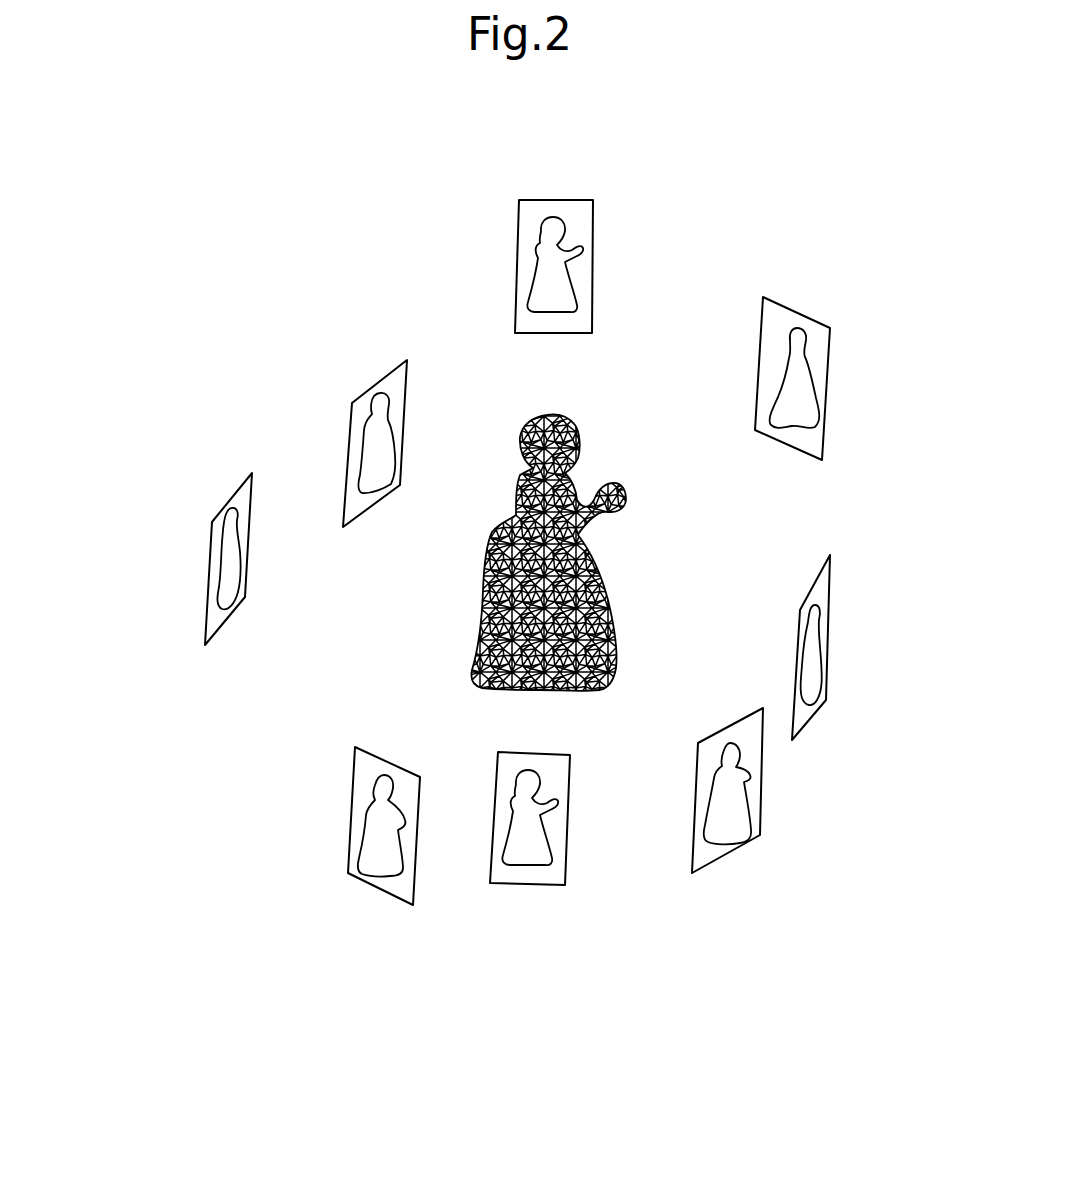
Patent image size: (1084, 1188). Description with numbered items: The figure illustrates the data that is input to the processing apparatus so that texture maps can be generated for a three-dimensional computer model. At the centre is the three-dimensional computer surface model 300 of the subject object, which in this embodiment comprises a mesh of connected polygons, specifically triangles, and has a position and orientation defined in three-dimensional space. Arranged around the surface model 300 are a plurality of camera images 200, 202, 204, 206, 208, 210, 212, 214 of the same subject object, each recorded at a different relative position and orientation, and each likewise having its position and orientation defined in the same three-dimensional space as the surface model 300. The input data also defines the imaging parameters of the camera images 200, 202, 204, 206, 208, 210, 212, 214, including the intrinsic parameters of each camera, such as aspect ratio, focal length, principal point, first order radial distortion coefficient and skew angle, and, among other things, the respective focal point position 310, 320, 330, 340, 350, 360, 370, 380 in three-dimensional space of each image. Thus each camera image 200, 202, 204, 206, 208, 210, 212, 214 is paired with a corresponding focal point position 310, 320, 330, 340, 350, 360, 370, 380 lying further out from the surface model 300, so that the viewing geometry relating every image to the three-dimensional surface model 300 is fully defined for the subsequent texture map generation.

The camera image 200 is at (594, 218).
The camera image 202 is at (832, 337).
The camera image 204 is at (834, 572).
The camera image 206 is at (763, 803).
The camera image 208 is at (570, 882).
The camera image 210 is at (353, 840).
The camera image 212 is at (225, 503).
The camera image 214 is at (392, 370).
The 3D computer surface model 300 is at (585, 557).
The focal point position 310 is at (551, 133).
The focal point position 320 is at (928, 290).
The focal point position 330 is at (930, 706).
The focal point position 340 is at (840, 938).
The focal point position 350 is at (518, 960).
The focal point position 360 is at (305, 988).
The focal point position 370 is at (55, 588).
The focal point position 380 is at (227, 352).